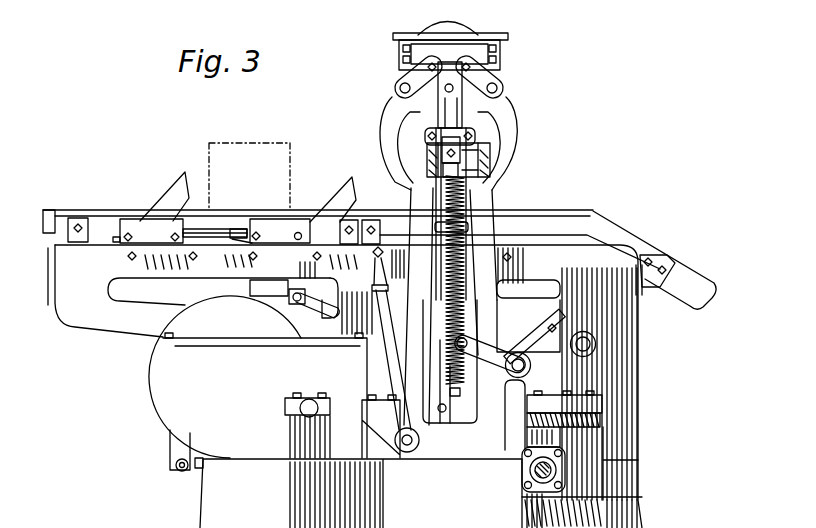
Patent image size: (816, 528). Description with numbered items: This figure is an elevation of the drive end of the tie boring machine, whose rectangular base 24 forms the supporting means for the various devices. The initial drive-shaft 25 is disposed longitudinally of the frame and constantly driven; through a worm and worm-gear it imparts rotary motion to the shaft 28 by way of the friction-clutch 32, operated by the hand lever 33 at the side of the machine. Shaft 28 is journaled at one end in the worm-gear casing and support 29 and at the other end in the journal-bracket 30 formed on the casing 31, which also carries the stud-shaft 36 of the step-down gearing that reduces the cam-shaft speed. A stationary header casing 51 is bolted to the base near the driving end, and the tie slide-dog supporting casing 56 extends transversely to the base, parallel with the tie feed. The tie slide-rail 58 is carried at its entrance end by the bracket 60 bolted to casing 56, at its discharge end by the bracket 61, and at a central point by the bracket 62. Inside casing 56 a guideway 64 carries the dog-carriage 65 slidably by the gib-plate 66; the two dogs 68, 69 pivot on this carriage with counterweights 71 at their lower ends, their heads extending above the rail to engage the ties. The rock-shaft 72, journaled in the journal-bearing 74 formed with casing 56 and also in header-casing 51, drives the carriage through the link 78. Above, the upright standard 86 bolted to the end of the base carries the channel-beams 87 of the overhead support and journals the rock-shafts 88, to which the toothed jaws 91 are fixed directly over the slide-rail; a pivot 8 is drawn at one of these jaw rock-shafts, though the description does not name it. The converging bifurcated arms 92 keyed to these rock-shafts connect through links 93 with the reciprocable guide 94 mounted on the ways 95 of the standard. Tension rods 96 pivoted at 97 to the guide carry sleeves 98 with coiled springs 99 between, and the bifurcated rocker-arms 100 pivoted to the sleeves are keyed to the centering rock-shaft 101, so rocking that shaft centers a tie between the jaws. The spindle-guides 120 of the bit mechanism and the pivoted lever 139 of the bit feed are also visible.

The pivot pin 8 is at (400, 88).
The rectangular base 24 is at (361, 493).
The initial drive-shaft 25 is at (522, 472).
The shaft 28 is at (603, 407).
The worm-gear casing and support 29 is at (552, 421).
The journal-bracket 30 is at (373, 424).
The casing 31 is at (225, 377).
The friction-clutch 32 is at (465, 418).
The hand lever 33 is at (376, 272).
The stud-shaft 36 is at (308, 399).
The stationary header casing 51 is at (537, 343).
The tie slide-dog supporting casing 56 is at (105, 291).
The tie slide-rail 58 is at (110, 205).
The bracket 60 is at (58, 232).
The bracket 61 is at (663, 263).
The bracket 62 is at (368, 217).
The guideway 64 is at (213, 233).
The dog-carriage 65 is at (235, 229).
The gib-plate 66 is at (250, 240).
The dog 68 is at (350, 178).
The dog 69 is at (182, 177).
The counterweight 71 is at (252, 287).
The rock-shaft 72 is at (593, 333).
The journal-bearing 74 is at (597, 340).
The link 78 is at (295, 300).
The upright standard 86 is at (493, 207).
The channel-beam 87 is at (418, 35).
The rock-shaft 88 is at (501, 89).
The jaw 91 is at (382, 110).
The converging bifurcated arm 92 is at (452, 63).
The link 93 is at (470, 111).
The reciprocable guide 94 is at (467, 163).
The ways 95 is at (436, 190).
The tension rod 96 is at (460, 230).
The pivotal connection 97 is at (447, 152).
The sleeve 98 is at (453, 372).
The coiled spring 99 is at (464, 261).
The bifurcated rocker-arm 100 is at (507, 348).
The centering rock-shaft 101 is at (531, 367).
The spindle-guide 120 is at (438, 320).
The pivoted lever 139 is at (170, 445).